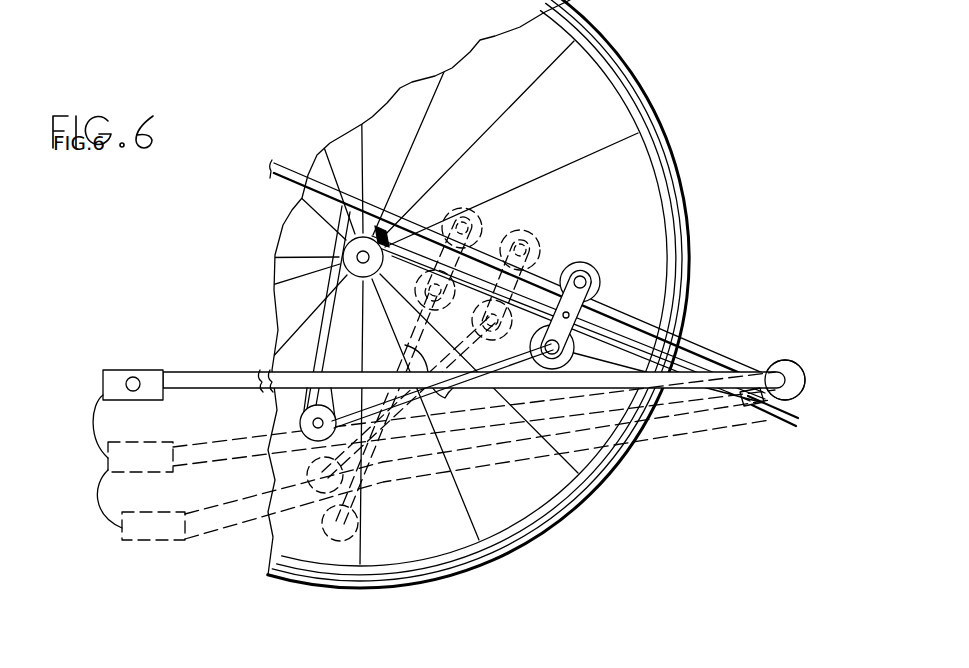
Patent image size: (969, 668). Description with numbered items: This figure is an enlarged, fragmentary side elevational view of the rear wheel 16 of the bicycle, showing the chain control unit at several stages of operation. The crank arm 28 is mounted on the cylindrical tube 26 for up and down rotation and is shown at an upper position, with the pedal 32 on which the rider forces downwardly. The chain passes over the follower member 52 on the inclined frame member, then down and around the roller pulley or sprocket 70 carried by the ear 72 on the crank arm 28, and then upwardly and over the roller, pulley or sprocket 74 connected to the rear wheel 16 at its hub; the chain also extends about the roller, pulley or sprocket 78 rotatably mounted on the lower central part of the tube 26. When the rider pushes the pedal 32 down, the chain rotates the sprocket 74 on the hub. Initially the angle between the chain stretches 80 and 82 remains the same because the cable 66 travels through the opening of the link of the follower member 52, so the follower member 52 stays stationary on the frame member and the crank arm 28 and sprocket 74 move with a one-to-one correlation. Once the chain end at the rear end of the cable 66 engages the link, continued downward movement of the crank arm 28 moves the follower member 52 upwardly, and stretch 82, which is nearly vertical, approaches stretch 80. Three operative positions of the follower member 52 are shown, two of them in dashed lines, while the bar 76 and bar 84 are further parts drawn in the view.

The rear wheel 16 is at (640, 80).
The cylindrical tube 26 is at (806, 372).
The crank arm 28 is at (213, 378).
The pedal 32 is at (103, 456).
The follower member 52 is at (537, 229).
The cable 66 is at (570, 270).
The roller pulley or sprocket 70 is at (352, 396).
The ear 72 is at (300, 410).
The roller, pulley or sprocket 74 is at (372, 240).
The bar 76 is at (312, 196).
The roller, pulley or sprocket 78 is at (786, 426).
The chain stretch 80 is at (327, 330).
The chain stretch 82 is at (442, 376).
The bar 84 is at (600, 322).